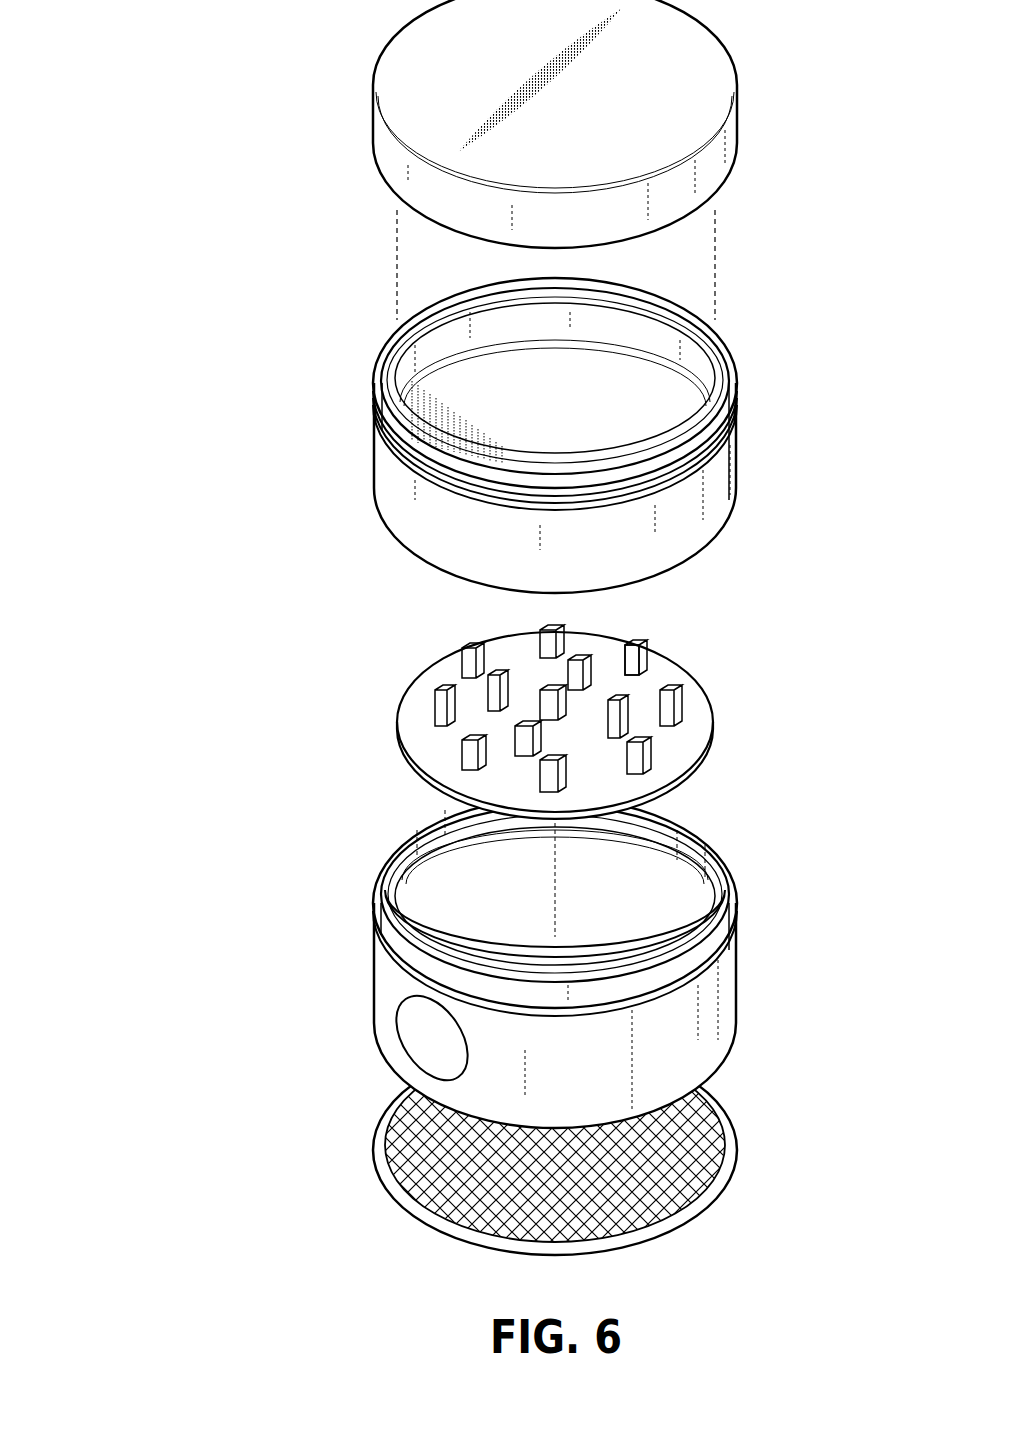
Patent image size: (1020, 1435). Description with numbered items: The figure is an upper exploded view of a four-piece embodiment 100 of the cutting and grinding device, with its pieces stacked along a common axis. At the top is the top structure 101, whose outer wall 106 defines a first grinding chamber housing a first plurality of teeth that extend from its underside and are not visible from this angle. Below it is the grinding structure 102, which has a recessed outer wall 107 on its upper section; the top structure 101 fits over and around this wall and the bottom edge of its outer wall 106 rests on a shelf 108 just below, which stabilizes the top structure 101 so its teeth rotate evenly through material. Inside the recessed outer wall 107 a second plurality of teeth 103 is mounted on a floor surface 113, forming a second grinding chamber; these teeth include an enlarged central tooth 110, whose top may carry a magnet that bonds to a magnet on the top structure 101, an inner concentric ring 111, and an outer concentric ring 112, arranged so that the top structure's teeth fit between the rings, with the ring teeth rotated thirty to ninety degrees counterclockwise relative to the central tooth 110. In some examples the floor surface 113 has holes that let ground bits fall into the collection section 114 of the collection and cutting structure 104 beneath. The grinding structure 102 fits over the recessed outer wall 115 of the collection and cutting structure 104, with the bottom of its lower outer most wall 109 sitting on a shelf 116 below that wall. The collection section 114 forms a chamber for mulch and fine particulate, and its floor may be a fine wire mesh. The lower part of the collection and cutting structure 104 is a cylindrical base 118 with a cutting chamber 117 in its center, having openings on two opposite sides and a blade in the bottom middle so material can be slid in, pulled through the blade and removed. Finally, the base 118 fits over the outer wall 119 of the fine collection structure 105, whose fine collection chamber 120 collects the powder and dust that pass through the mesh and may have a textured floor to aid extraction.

The four-piece embodiment 100 is at (185, 610).
The top structure 101 is at (780, 92).
The grinding structure 102 is at (780, 404).
The second plurality of teeth 103 is at (780, 696).
The collection and cutting structure 104 is at (780, 939).
The fine collection structure 105 is at (780, 1157).
The outer wall 106 is at (400, 175).
The recessed outer wall 107 is at (432, 452).
The shelf 108 is at (716, 446).
The lower outer most wall 109 is at (400, 503).
The central tooth 110 is at (550, 712).
The inner concentric ring 111 is at (585, 673).
The grinding tooth 112 is at (637, 662).
The floor surface 113 is at (422, 717).
The collection section 114 is at (485, 878).
The recessed outer wall 115 is at (712, 868).
The shelf 116 is at (718, 947).
The cutting chamber 117 is at (432, 1047).
The cylindrical base 118 is at (397, 980).
The outer wall 119 is at (710, 1187).
The fine collection chamber 120 is at (450, 1180).